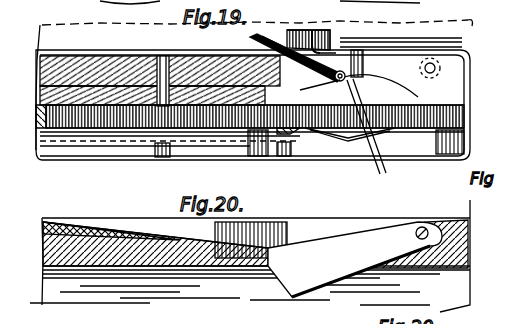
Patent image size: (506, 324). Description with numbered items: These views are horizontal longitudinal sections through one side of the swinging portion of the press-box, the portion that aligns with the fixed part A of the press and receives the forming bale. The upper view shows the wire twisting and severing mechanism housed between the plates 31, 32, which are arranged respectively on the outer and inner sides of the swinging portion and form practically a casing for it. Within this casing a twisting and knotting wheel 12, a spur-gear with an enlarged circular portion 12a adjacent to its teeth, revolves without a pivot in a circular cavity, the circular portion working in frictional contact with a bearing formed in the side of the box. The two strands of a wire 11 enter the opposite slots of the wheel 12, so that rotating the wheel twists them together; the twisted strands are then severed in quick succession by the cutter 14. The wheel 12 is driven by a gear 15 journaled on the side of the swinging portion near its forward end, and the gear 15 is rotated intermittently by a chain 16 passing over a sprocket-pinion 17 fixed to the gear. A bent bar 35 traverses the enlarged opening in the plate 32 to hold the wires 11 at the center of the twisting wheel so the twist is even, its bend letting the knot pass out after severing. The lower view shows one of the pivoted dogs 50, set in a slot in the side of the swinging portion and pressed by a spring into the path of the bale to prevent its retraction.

In FIG. 19, the wires 11 is at (392, 176).
In FIG. 19, the twisting and knotting wheels 12 is at (432, 110).
In FIG. 19, the enlarged circular portion 12a is at (420, 84).
In FIG. 19, the cutter 14 is at (330, 141).
In FIG. 19, the gears 15 is at (222, 135).
In FIG. 19, the chain 16 is at (97, 147).
In FIG. 19, the sprocket-pinions 17 is at (156, 150).
In FIG. 19, the plate 31 is at (320, 130).
In FIG. 19, the plate 32 is at (410, 49).
In FIG. 19, the bent bar 35 is at (344, 50).
In FIG. 19, the pivoted dog 50 is at (292, 32).
In FIG. 20, the pivoted dog 50 is at (355, 259).
In FIG. 19, the fixed part of the press-box A is at (125, 57).
In FIG. 20, the fixed part of the press-box A is at (101, 251).